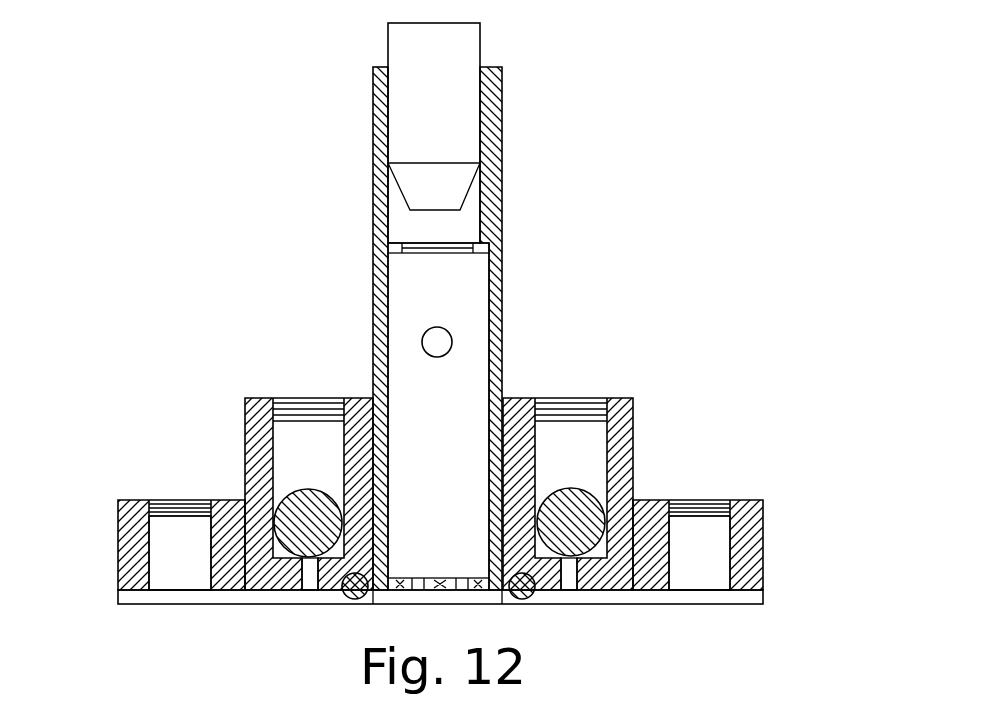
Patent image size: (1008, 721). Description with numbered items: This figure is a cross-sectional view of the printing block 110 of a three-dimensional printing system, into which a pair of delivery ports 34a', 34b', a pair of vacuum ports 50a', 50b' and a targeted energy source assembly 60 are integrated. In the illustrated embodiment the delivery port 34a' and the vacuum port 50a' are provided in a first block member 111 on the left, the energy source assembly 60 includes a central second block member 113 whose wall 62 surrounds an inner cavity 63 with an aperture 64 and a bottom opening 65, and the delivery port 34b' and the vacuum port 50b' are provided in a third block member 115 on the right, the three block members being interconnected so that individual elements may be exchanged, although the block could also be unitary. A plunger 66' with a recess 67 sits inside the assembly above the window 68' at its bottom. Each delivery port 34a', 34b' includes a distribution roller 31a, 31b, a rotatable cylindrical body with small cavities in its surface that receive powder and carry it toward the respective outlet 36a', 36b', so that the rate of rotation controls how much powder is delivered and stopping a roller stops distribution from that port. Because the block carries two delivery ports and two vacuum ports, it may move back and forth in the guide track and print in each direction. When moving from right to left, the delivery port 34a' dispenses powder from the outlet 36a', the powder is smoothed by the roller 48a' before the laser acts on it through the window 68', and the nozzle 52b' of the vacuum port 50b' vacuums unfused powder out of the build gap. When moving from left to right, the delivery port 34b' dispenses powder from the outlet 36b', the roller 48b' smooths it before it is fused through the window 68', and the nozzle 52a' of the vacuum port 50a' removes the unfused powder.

The printing block 110 is at (175, 123).
The targeted energy source assembly 60 is at (335, 200).
The tubular wall 62 is at (500, 283).
The inner cavity 63 is at (467, 385).
The aperture 64 is at (421, 340).
The bottom opening 65 is at (410, 578).
The plunger 66' is at (458, 125).
The plunger recess 67 is at (503, 150).
The window 68' is at (454, 605).
The first block member 111 is at (120, 498).
The second block member 113 is at (514, 250).
The third block member 115 is at (763, 598).
The distribution roller 31a is at (306, 490).
The distribution roller 31b is at (570, 489).
The delivery port 34a' is at (298, 384).
The delivery port 34b' is at (592, 383).
The outlet 36a' is at (275, 607).
The outlet 36b' is at (589, 607).
The roller 48a' is at (345, 610).
The roller 48b' is at (539, 622).
The vacuum port 50a' is at (174, 480).
The vacuum port 50b' is at (722, 482).
The nozzle 52a' is at (169, 591).
The nozzle 52b' is at (716, 586).